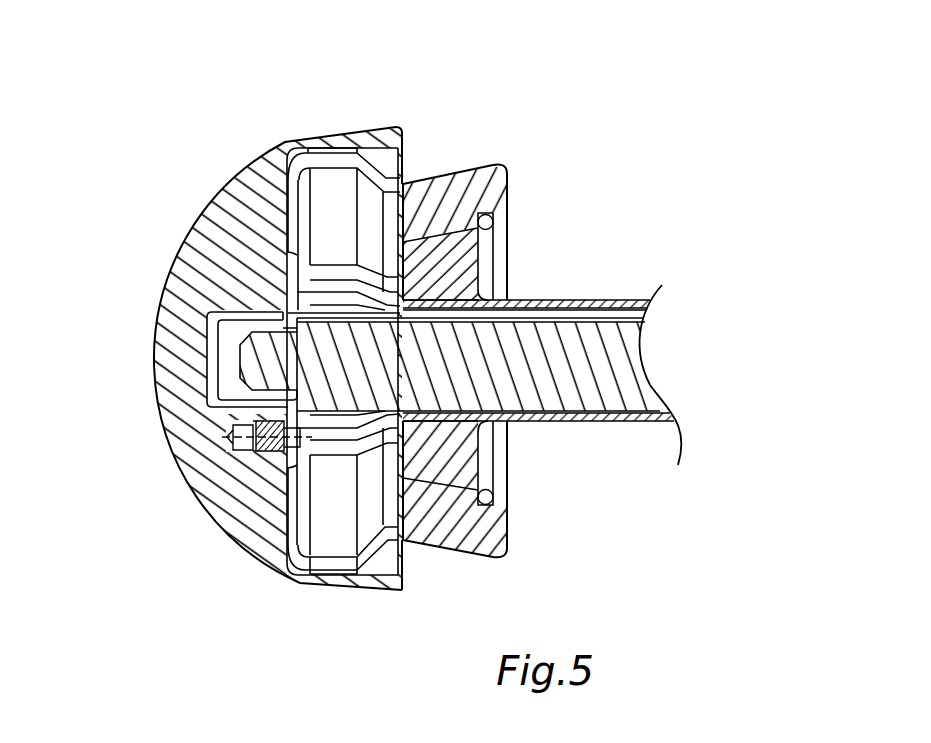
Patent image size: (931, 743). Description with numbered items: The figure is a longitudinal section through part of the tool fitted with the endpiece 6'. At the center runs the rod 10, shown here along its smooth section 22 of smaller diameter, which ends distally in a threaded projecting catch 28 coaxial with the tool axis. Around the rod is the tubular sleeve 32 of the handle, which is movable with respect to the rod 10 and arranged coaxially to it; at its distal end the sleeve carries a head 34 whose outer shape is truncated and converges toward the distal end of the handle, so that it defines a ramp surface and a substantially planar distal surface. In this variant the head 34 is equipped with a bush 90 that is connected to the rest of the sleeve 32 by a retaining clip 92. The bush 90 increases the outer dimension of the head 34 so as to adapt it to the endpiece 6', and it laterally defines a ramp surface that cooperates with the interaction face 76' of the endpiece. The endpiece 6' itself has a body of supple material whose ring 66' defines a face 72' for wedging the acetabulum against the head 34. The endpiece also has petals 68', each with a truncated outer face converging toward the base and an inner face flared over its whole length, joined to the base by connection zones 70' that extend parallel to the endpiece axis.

The endpiece 6' is at (237, 358).
The rod 10 is at (650, 343).
The smooth section 22 is at (628, 382).
The projecting catch 28 is at (263, 358).
The tubular sleeve 32 is at (589, 298).
The head 34 is at (508, 229).
The ring 66' is at (473, 430).
The petals 68' is at (381, 177).
The connection zones 70' is at (344, 175).
The wedging face 72' is at (319, 543).
The interaction face 76' is at (373, 531).
The bush 90 is at (470, 190).
The retaining clip 92 is at (507, 257).